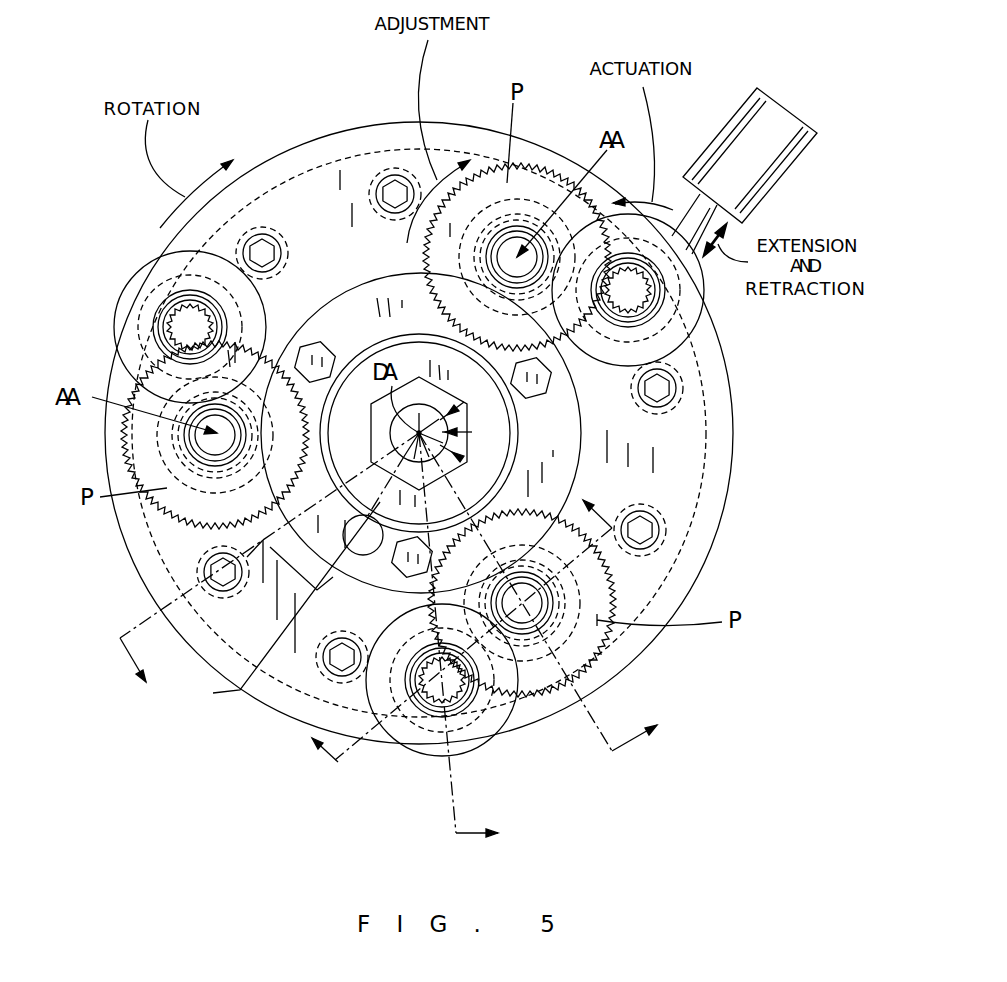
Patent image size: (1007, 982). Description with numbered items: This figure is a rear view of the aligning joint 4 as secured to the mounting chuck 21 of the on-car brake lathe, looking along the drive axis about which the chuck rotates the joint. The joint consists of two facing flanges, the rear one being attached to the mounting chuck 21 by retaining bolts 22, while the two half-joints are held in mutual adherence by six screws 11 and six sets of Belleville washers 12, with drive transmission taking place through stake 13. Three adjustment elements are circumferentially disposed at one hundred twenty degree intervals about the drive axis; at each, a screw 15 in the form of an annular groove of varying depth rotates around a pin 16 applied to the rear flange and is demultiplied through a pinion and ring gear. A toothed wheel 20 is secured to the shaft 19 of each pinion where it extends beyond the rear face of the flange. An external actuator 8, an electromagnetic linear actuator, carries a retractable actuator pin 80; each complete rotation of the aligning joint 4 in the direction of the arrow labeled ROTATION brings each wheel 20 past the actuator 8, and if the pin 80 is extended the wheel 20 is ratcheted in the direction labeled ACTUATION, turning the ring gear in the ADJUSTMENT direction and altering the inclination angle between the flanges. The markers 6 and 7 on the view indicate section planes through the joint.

The aligning joint 4 is at (455, 95).
The section line 6- 6 is at (303, 568).
The display 7 is at (547, 571).
The external actuator 8 is at (778, 119).
The screws 11 is at (265, 252).
The Belleville washers 12 is at (476, 632).
The stake 13 is at (397, 608).
The screw 15 is at (525, 208).
The pin 16 is at (523, 233).
The shaft 19 is at (180, 303).
The toothed wheel 20 is at (140, 333).
The mounting chuck 21 is at (548, 445).
The retaining bolts 22 is at (316, 357).
The retractable actuator pin 80 is at (690, 208).